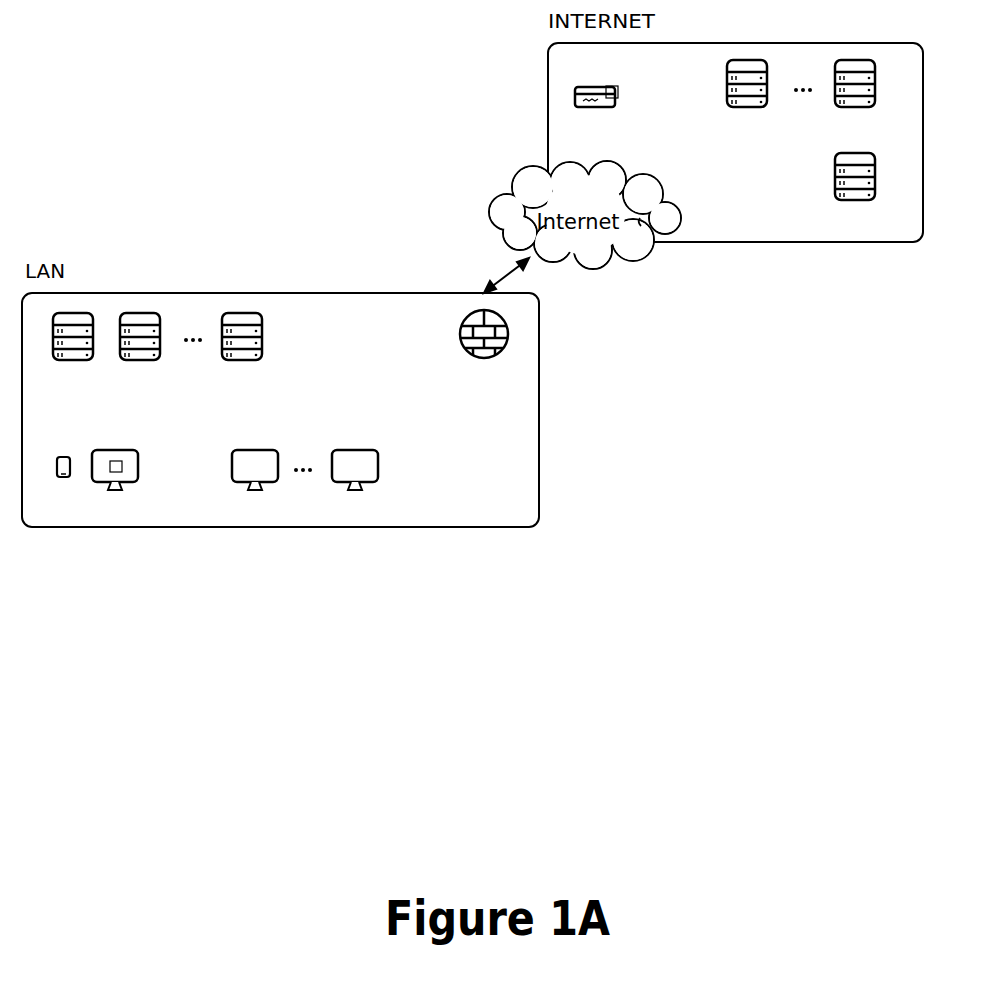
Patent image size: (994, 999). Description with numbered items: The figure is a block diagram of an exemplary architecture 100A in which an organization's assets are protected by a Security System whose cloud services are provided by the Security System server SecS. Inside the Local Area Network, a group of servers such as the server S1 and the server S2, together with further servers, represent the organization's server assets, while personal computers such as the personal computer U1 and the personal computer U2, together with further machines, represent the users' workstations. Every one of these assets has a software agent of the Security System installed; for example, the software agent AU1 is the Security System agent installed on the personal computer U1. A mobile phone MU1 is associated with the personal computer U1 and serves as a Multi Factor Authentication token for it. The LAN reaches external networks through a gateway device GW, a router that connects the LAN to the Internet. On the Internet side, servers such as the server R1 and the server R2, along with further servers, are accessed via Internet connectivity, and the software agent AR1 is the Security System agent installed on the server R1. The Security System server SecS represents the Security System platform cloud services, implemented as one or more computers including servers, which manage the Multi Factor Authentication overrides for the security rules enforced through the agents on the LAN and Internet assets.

The architecture 100A is at (790, 753).
The server S1 is at (73, 348).
The server S2 is at (140, 348).
The gateway device GW is at (484, 347).
The mobile phone MU1 is at (64, 483).
The personal computer U1 is at (115, 479).
The software agent AU1 is at (122, 467).
The personal computer U2 is at (255, 479).
The server R1 is at (595, 110).
The software agent AR1 is at (619, 92).
The server R2 is at (747, 96).
The Security System server SecS is at (855, 189).